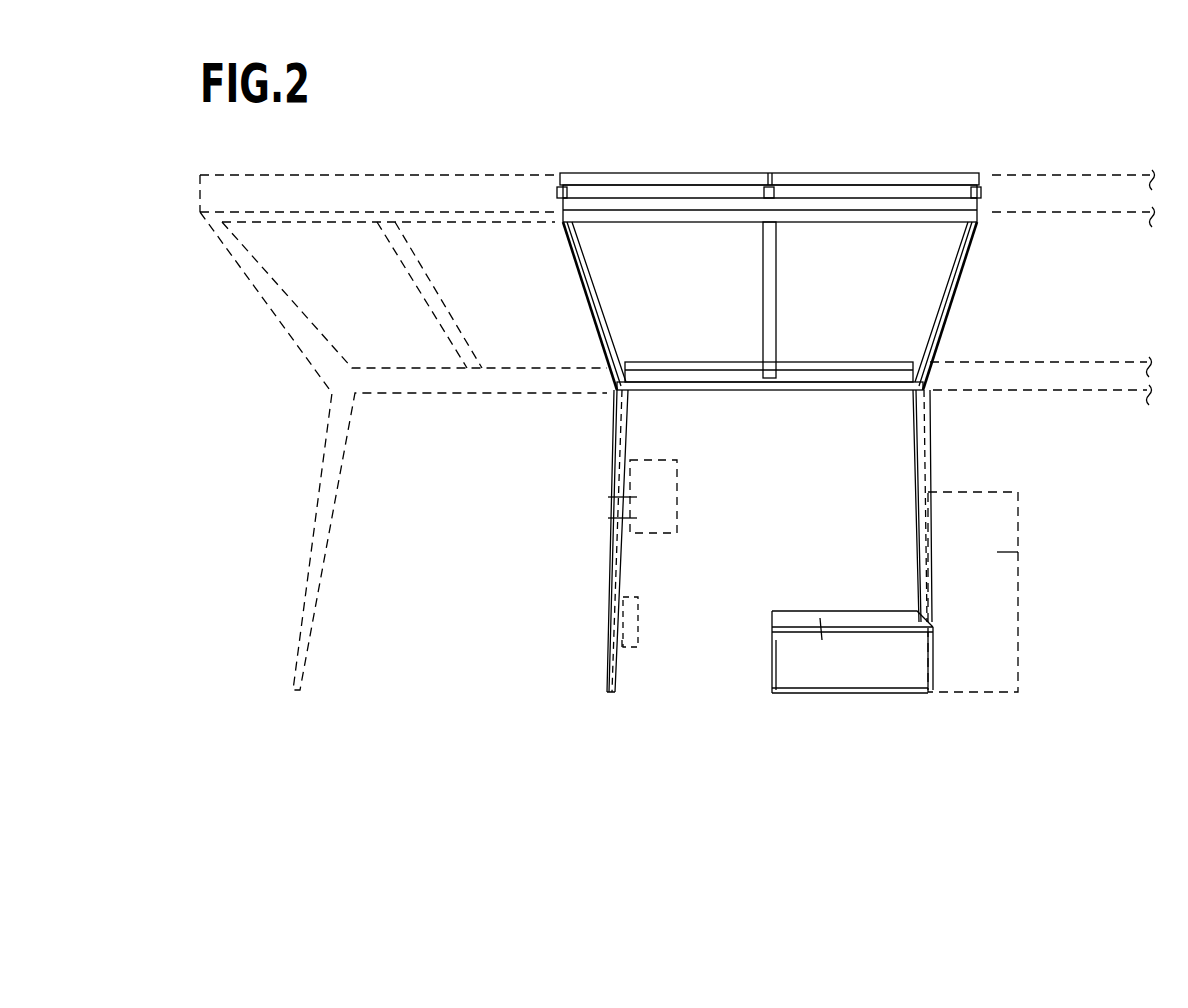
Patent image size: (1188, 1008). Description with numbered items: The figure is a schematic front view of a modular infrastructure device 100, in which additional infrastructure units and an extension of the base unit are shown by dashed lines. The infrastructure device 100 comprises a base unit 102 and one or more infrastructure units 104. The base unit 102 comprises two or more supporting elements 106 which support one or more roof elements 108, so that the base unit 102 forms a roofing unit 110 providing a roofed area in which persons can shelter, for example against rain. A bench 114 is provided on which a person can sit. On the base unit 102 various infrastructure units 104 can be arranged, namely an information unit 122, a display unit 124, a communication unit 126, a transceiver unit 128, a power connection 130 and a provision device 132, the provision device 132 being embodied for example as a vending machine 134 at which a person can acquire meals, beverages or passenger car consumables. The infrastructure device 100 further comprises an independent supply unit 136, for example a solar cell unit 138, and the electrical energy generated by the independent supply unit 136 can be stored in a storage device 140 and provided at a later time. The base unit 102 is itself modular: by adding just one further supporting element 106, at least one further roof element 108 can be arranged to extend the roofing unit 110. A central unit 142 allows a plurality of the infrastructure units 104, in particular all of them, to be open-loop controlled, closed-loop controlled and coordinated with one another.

The infrastructure device 100 is at (728, 143).
The base unit 102 is at (807, 143).
The infrastructure unit 104 is at (632, 638).
The supporting element 106 is at (920, 477).
The roof element 108 is at (905, 299).
The roofing unit 110 is at (978, 272).
The bench 114 is at (820, 618).
The information unit 122 is at (637, 475).
The display unit 124 is at (637, 495).
The communication unit 126 is at (637, 517).
The transceiver unit 128 is at (623, 617).
The power connection 130 is at (622, 640).
The provision device 132 is at (997, 518).
The vending machine 134 is at (997, 552).
The independent supply unit 136 is at (625, 173).
The solar cell unit 138 is at (892, 173).
The storage device 140 is at (897, 662).
The central unit 142 is at (812, 657).